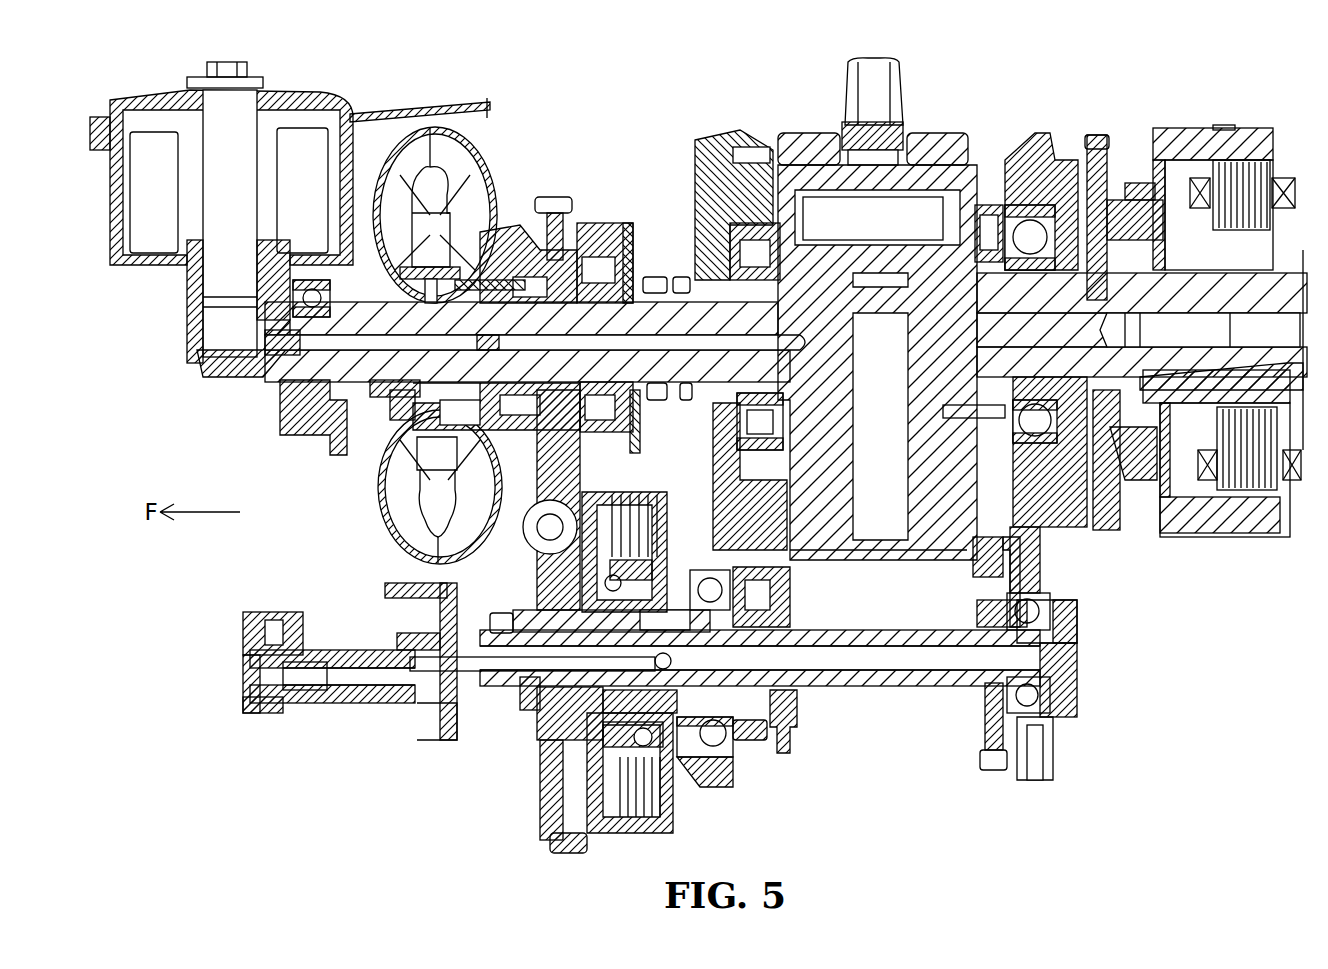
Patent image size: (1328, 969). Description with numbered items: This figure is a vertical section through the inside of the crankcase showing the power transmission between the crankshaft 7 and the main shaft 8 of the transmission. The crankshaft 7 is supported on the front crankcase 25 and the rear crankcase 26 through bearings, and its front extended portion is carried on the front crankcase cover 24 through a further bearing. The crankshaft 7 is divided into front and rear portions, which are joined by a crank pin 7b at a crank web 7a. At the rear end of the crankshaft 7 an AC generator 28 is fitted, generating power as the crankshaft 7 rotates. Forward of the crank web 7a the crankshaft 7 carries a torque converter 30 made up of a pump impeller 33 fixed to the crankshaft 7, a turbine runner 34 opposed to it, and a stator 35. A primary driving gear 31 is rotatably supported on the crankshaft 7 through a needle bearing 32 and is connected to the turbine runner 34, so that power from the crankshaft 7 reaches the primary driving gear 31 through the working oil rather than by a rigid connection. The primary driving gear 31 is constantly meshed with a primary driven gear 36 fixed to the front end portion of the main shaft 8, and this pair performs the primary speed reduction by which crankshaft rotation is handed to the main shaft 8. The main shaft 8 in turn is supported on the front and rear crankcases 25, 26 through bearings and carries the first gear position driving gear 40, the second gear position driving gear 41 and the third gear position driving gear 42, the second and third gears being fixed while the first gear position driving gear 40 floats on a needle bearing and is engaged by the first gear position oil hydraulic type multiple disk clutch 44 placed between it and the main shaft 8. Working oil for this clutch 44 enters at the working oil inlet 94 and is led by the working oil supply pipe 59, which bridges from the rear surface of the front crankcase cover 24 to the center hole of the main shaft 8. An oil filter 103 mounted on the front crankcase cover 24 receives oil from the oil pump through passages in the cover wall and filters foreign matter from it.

The crankshaft 7 is at (705, 305).
The crank web 7a is at (803, 150).
The crank pin 7b is at (935, 185).
The main shaft 8 is at (880, 680).
The front crankcase cover 24 is at (311, 435).
The front crankcase 25 is at (702, 132).
The rear crankcase 26 is at (1043, 133).
The AC generator 28 is at (1193, 135).
The torque converter 30 is at (511, 153).
The primary driving gear 31 is at (552, 198).
The needle bearing 32 is at (582, 262).
The pump impeller 33 is at (402, 172).
The turbine runner 34 is at (452, 168).
The stator 35 is at (488, 118).
The primary driven gear 36 is at (545, 850).
The first gear position driving gear 40 is at (752, 738).
The second gear position driving gear 41 is at (800, 748).
The third gear position driving gear 42 is at (995, 765).
The first gear position oil hydraulic type multiple disk clutch 44 is at (680, 808).
The working oil supply pipe 59 is at (465, 675).
The working oil inlet 94 is at (375, 675).
The oil filter 103 is at (190, 263).